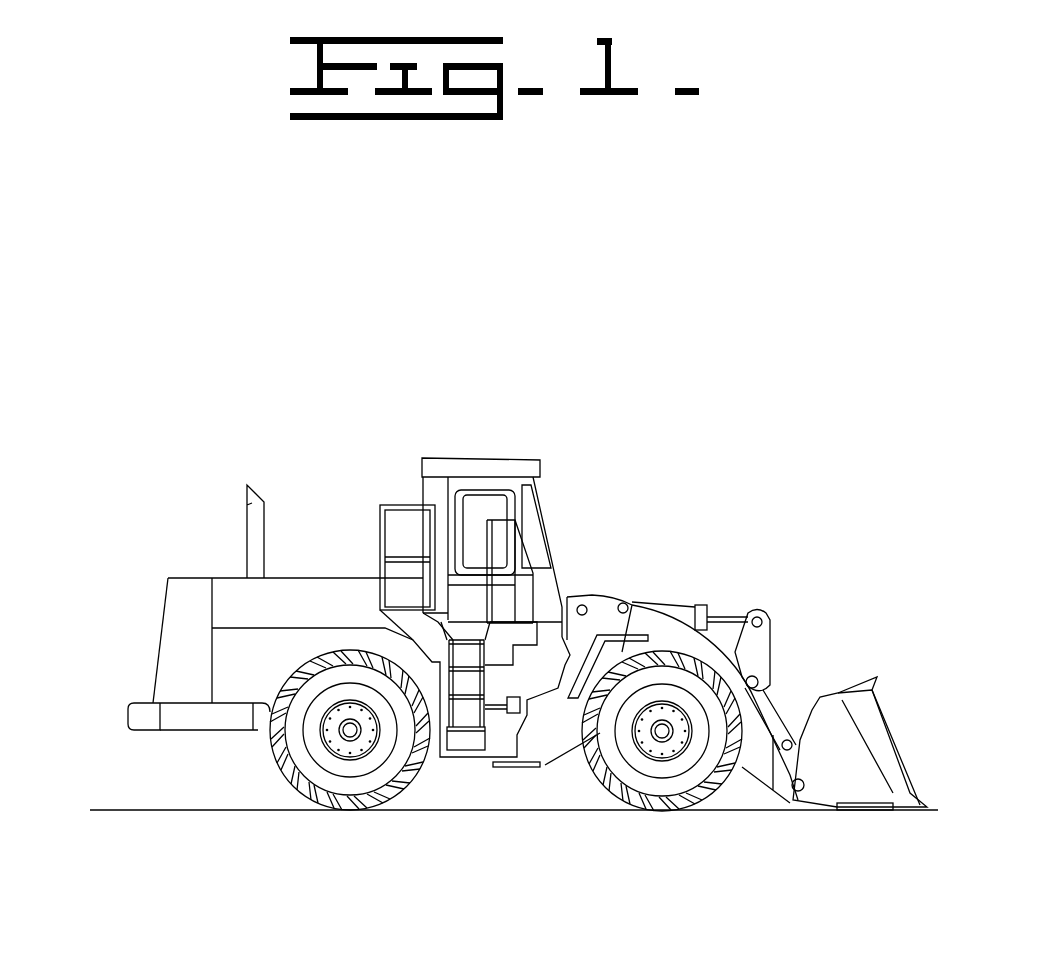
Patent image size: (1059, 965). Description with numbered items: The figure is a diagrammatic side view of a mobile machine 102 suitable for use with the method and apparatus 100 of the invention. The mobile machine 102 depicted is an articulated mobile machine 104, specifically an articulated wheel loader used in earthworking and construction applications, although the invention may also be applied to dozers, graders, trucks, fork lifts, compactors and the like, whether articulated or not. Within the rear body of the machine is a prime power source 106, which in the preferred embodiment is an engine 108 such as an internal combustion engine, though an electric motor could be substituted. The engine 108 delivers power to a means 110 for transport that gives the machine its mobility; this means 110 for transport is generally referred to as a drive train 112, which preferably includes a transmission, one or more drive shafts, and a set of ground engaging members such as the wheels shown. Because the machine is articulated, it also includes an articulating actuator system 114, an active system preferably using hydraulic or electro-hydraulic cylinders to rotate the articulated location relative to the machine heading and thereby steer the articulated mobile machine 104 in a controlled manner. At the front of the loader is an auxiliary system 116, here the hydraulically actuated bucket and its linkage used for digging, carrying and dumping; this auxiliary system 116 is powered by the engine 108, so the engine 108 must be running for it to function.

The method and apparatus 100 is at (205, 343).
The mobile machine 102 is at (349, 474).
The articulated mobile machine 104 is at (323, 578).
The prime power source 106 is at (155, 561).
The engine 108 is at (129, 592).
The means for transport 110 is at (404, 836).
The drive train 112 is at (454, 853).
The articulating actuator system 114 is at (527, 799).
The auxiliary system 116 is at (794, 593).